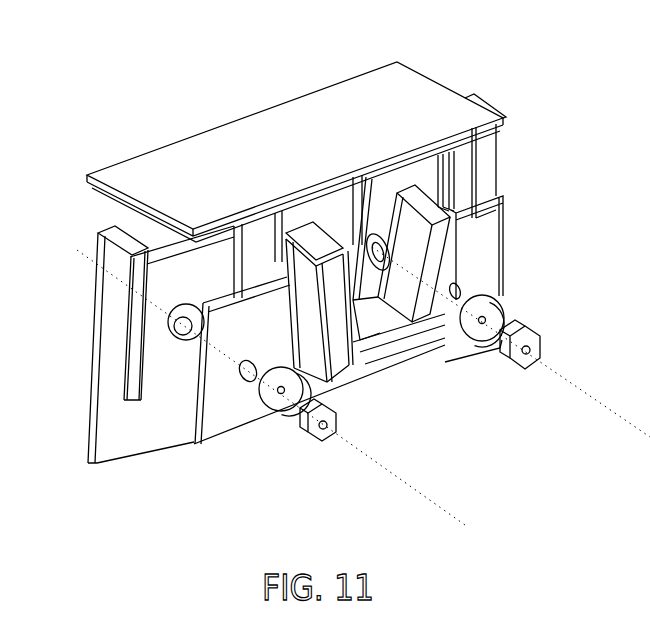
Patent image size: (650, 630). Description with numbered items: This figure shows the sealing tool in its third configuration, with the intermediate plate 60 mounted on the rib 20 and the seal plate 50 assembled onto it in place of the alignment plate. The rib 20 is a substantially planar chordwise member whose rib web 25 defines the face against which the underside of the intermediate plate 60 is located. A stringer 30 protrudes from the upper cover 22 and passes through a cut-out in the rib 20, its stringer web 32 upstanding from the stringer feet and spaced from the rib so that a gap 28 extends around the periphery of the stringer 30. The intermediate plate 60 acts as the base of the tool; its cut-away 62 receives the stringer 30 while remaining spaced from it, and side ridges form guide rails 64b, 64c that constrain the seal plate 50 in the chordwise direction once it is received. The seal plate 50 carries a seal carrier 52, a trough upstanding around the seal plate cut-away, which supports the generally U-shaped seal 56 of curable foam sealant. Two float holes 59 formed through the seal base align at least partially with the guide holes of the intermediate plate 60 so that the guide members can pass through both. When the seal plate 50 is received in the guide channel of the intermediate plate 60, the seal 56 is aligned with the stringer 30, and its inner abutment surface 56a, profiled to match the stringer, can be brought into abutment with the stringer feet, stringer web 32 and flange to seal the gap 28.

The rib 20 is at (90, 412).
The upper cover 22 is at (428, 104).
The rib web 25 is at (117, 318).
The gap 28 is at (250, 278).
The stringer 30 is at (334, 197).
The stringer web 32 is at (254, 232).
The seal plate 50 is at (487, 233).
The seal carrier 52 is at (440, 352).
The seal 56 is at (377, 347).
The inner abutment surface 56a is at (393, 300).
The float hole 59 is at (460, 290).
The intermediate plate 60 is at (446, 172).
The cut-away 62 is at (155, 354).
The guide rail 64b is at (117, 405).
The guide rail 64c is at (446, 192).